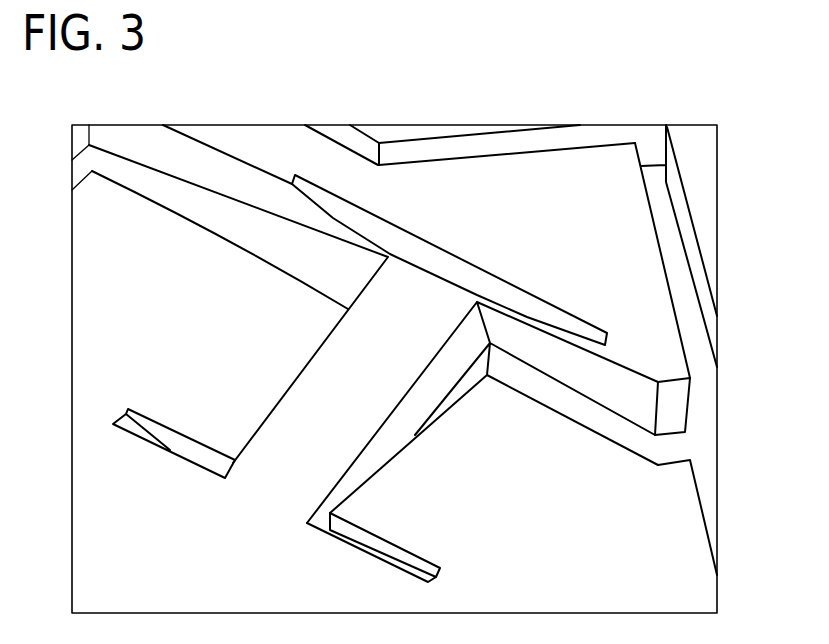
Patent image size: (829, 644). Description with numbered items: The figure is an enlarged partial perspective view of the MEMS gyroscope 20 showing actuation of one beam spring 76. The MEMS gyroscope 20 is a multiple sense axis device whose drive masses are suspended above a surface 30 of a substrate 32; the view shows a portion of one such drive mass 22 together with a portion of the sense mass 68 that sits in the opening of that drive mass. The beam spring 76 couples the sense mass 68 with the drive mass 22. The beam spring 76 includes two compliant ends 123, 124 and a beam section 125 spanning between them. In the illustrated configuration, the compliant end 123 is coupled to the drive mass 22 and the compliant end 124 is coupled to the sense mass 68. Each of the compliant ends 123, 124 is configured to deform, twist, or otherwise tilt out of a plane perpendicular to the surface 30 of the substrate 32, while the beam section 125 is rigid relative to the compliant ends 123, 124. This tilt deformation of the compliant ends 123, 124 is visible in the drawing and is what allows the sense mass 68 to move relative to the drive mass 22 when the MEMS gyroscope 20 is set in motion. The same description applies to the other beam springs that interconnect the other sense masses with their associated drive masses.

The MEMS gyroscope 20 is at (280, 86).
The drive mass 22 is at (523, 175).
The surface 30 is at (705, 412).
The substrate 32 is at (703, 441).
The sense mass 68 is at (690, 558).
The beam spring 76 is at (292, 378).
The compliant end 123 is at (533, 343).
The compliant end 124 is at (158, 440).
The beam section 125 is at (365, 396).